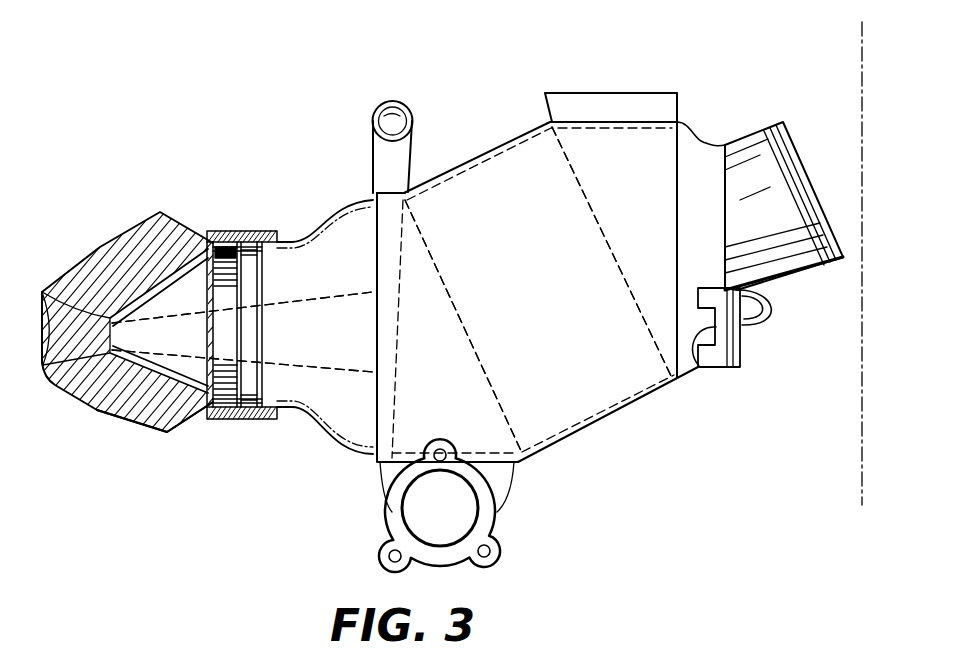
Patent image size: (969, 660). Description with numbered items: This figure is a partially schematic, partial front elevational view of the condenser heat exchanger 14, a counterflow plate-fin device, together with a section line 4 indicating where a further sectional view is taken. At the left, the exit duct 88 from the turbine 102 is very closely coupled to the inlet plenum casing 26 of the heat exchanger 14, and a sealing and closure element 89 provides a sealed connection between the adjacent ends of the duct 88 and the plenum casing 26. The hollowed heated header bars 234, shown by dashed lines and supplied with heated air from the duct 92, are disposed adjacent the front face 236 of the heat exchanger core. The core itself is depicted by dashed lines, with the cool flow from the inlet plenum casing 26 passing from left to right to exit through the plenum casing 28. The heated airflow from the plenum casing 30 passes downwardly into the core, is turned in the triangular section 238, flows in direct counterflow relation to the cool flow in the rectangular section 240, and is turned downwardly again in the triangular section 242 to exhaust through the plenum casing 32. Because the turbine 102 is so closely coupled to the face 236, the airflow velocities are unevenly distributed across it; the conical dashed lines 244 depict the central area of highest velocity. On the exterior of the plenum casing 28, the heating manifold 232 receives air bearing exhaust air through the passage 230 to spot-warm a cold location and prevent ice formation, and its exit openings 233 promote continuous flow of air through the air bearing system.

The section line 4- 4 is at (832, 485).
The heat exchange means 14 is at (499, 98).
The inlet plenum casing 26 is at (341, 216).
The plenum casing 28 is at (703, 142).
The plenum casing 30 is at (630, 93).
The plenum casing 32 is at (394, 516).
The exit duct 88 is at (150, 372).
The sealing and closure element 89 is at (248, 413).
The duct 92 is at (396, 102).
The turbine 102 is at (55, 386).
The passage 230 is at (763, 314).
The heating manifold 232 is at (725, 360).
The exit openings 233 is at (698, 372).
The heated header bars 234 is at (398, 342).
The front face 236 is at (366, 243).
The triangular section 238 is at (600, 222).
The rectangular section 240 is at (556, 295).
The triangular section 242 is at (468, 428).
The conical dashed lines 244 is at (316, 300).